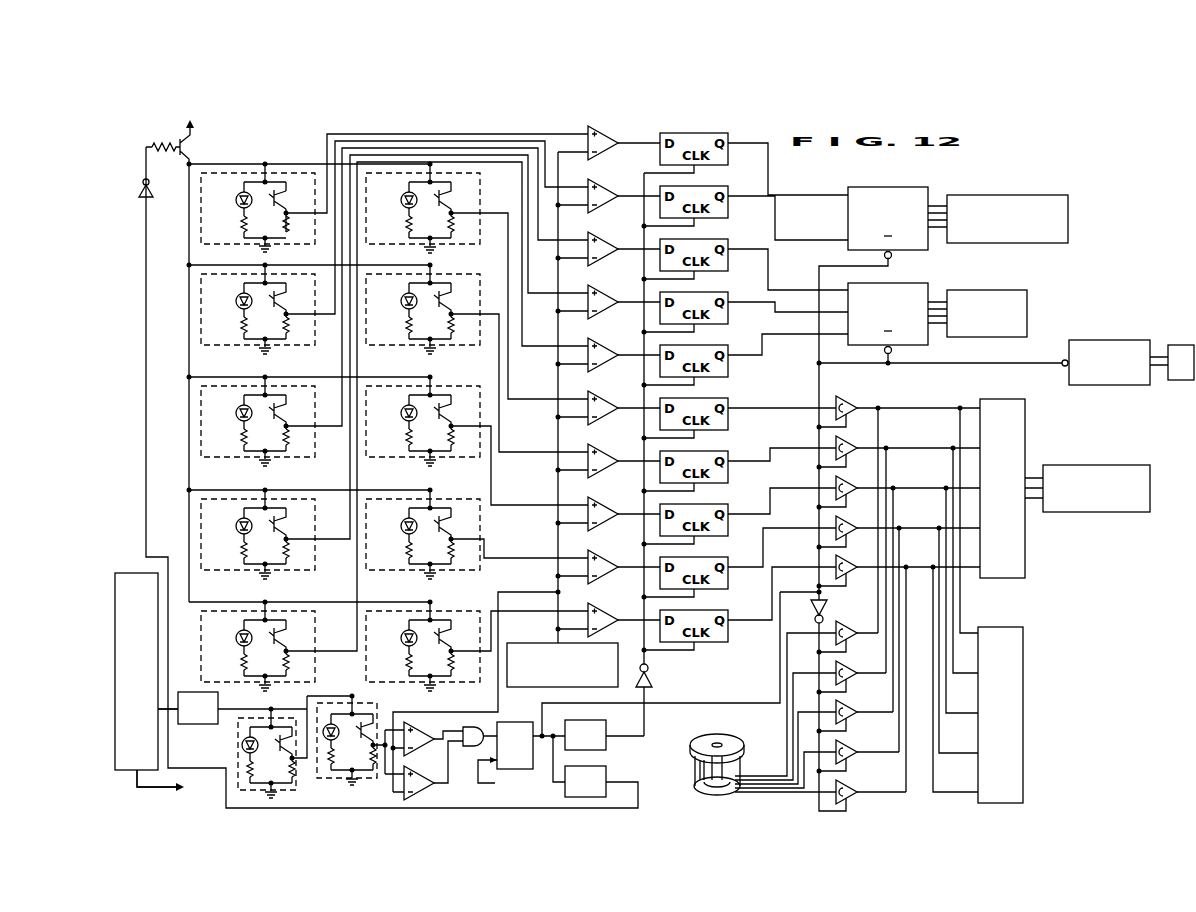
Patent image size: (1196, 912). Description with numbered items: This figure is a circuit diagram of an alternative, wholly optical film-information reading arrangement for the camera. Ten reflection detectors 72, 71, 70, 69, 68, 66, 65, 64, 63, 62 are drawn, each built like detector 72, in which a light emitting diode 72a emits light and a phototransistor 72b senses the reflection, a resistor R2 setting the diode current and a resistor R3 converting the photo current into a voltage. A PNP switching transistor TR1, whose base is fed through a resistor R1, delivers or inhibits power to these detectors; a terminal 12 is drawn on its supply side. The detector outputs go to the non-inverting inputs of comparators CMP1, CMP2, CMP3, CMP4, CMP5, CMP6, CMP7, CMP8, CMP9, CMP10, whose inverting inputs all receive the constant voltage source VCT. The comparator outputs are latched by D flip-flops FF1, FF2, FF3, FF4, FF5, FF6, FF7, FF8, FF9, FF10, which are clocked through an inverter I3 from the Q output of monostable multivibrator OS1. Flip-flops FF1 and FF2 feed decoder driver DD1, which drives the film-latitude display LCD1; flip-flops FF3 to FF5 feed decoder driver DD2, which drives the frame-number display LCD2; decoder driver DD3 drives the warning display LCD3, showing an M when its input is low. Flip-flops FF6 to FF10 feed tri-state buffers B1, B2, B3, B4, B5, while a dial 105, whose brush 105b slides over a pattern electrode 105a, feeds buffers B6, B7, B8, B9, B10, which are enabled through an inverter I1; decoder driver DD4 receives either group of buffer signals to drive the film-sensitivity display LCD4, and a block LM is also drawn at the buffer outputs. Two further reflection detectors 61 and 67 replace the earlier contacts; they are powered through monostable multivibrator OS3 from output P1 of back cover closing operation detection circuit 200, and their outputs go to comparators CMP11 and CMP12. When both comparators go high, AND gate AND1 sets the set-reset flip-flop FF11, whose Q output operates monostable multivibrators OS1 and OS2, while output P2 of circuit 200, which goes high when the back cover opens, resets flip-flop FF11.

The resistor R1 is at (162, 145).
The PNP switching transistor TR1 is at (190, 143).
The power input terminal 12 is at (153, 190).
The light emitting diode 72a is at (236, 198).
The phototransistor 72b is at (285, 196).
The resistor R2 is at (240, 227).
The resistor R3 is at (282, 226).
The reflection detector 72 is at (261, 212).
The reflection detector 71 is at (298, 346).
The reflection detector 70 is at (298, 458).
The reflection detector 69 is at (315, 520).
The reflection detector 68 is at (315, 628).
The reflection detector 66 is at (480, 190).
The reflection detector 65 is at (462, 280).
The reflection detector 64 is at (462, 387).
The reflection detector 63 is at (462, 500).
The reflection detector 62 is at (462, 612).
The back cover closing operation detection circuit 200 is at (134, 572).
The output of the detection circuit P1 is at (174, 696).
The output of the detection circuit P2 is at (174, 783).
The monostable multivibrator OS3 is at (204, 724).
The reflection detector 67 is at (280, 790).
The reflection detector 61 is at (322, 778).
The comparator CMP1 is at (612, 124).
The comparator CMP2 is at (612, 177).
The comparator CMP3 is at (612, 230).
The comparator CMP4 is at (612, 283).
The comparator CMP5 is at (612, 336).
The comparator CMP6 is at (612, 389).
The comparator CMP7 is at (612, 442).
The comparator CMP8 is at (612, 495).
The comparator CMP9 is at (612, 548).
The comparator CMP10 is at (612, 601).
The comparator CMP11 is at (420, 753).
The comparator CMP12 is at (424, 797).
The AND gate AND1 is at (471, 748).
The D type flip-flop FF1 is at (723, 133).
The D type flip-flop FF2 is at (723, 186).
The D type flip-flop FF3 is at (723, 239).
The D type flip-flop FF4 is at (723, 292).
The D type flip-flop FF5 is at (723, 345).
The D type flip-flop FF6 is at (723, 398).
The D type flip-flop FF7 is at (723, 451).
The D type flip-flop FF8 is at (723, 504).
The D type flip-flop FF9 is at (723, 557).
The D type flip-flop FF10 is at (723, 610).
The latching set-reset flip-flop FF11 is at (533, 759).
The monostable multivibrator OS1 is at (600, 750).
The monostable multivibrator OS2 is at (600, 797).
The constant voltage source VCT is at (562, 655).
The inverter I3 is at (652, 677).
The inverter I1 is at (811, 607).
The film information input dial 105 is at (711, 766).
The pattern electrode 105a is at (730, 795).
The brush 105b is at (695, 773).
The tri-state buffer B1 is at (846, 401).
The tri-state buffer B2 is at (850, 441).
The tri-state buffer B3 is at (850, 481).
The tri-state buffer B4 is at (850, 521).
The tri-state buffer B5 is at (850, 560).
The tri-state buffer B6 is at (847, 626).
The tri-state buffer B7 is at (849, 666).
The tri-state buffer B8 is at (849, 705).
The tri-state buffer B9 is at (849, 745).
The tri-state buffer B10 is at (849, 785).
The decoder driver DD1 is at (906, 181).
The decoder driver DD2 is at (908, 277).
The decoder driver DD3 is at (1127, 340).
The decoder driver DD4 is at (1016, 399).
The external display device LCD1 is at (1042, 195).
The external display device LCD2 is at (1007, 290).
The warning or M external display device LCD3 is at (1180, 345).
The film sensitivity external display device LCD4 is at (1123, 465).
The photometric computation circuit LM is at (1004, 626).